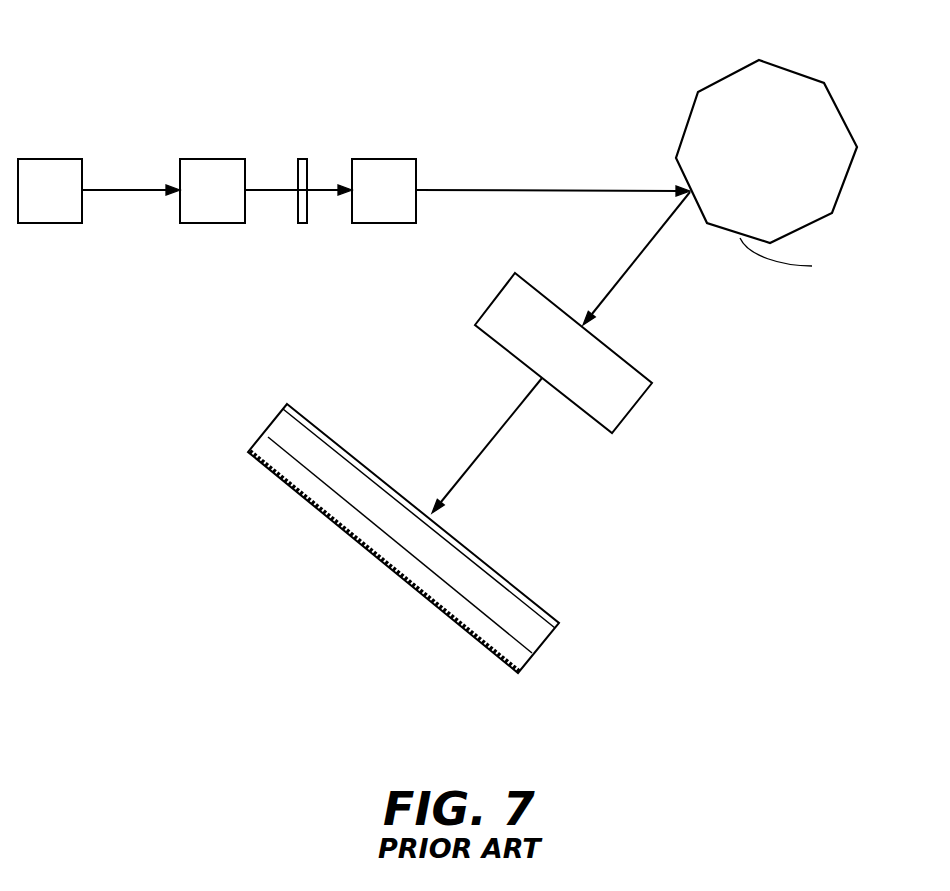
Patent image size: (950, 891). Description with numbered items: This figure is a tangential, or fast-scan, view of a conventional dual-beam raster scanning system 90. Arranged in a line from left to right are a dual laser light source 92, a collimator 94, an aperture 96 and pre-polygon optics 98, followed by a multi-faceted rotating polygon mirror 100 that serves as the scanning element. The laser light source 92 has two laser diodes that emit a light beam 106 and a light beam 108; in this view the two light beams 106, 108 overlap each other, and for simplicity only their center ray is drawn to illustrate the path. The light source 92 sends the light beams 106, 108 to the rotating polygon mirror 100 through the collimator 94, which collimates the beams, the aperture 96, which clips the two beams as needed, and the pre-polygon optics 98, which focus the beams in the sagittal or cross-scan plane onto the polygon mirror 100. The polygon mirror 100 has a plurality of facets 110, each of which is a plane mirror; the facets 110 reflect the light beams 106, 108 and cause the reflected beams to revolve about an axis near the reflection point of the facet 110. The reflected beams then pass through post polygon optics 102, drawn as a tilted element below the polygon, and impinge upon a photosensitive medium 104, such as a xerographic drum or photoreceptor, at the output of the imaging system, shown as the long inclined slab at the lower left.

The raster scanning system 90 is at (333, 50).
The dual laser light source 92 is at (32, 159).
The collimator 94 is at (192, 159).
The aperture 96 is at (302, 223).
The pre-polygon optics 98 is at (365, 159).
The rotating polygon mirror 100 is at (780, 80).
The post polygon optics 102 is at (630, 410).
The photosensitive medium 104 is at (532, 657).
The light beam 106 is at (422, 349).
The light beam 108 is at (97, 192).
The facets 110 is at (787, 240).